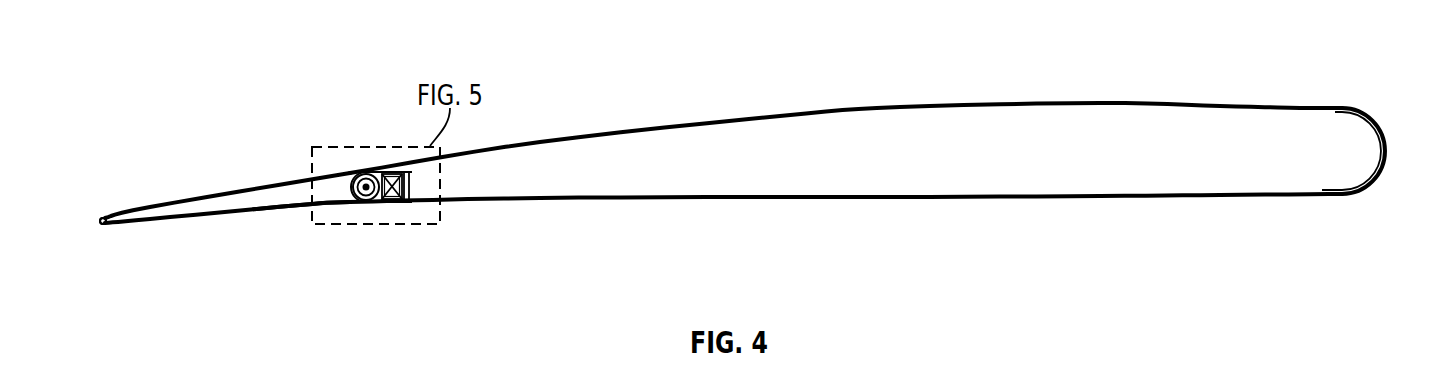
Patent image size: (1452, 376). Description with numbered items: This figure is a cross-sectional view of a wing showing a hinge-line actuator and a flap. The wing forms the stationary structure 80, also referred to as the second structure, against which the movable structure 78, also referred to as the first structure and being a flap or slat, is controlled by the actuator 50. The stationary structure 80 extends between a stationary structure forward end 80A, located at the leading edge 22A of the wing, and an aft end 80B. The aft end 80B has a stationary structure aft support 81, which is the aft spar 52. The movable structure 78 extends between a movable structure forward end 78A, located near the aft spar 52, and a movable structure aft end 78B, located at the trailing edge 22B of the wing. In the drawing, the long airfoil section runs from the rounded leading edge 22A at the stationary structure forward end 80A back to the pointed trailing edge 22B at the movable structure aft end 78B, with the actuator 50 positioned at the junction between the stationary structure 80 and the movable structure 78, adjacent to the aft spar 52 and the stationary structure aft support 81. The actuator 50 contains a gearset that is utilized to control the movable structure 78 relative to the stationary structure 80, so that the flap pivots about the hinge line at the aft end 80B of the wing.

The stationary structure 80 is at (1113, 162).
The stationary structure forward end 80A is at (1353, 102).
The aft end 80B is at (405, 200).
The leading edge 22A is at (1390, 157).
The trailing edge 22B is at (110, 213).
The movable structure 78 is at (272, 193).
The movable structure forward end 78A is at (332, 197).
The movable structure aft end 78B is at (104, 240).
The stationary structure aft support 81 is at (420, 178).
The actuator 50 is at (362, 184).
The aft spar 52 is at (410, 190).